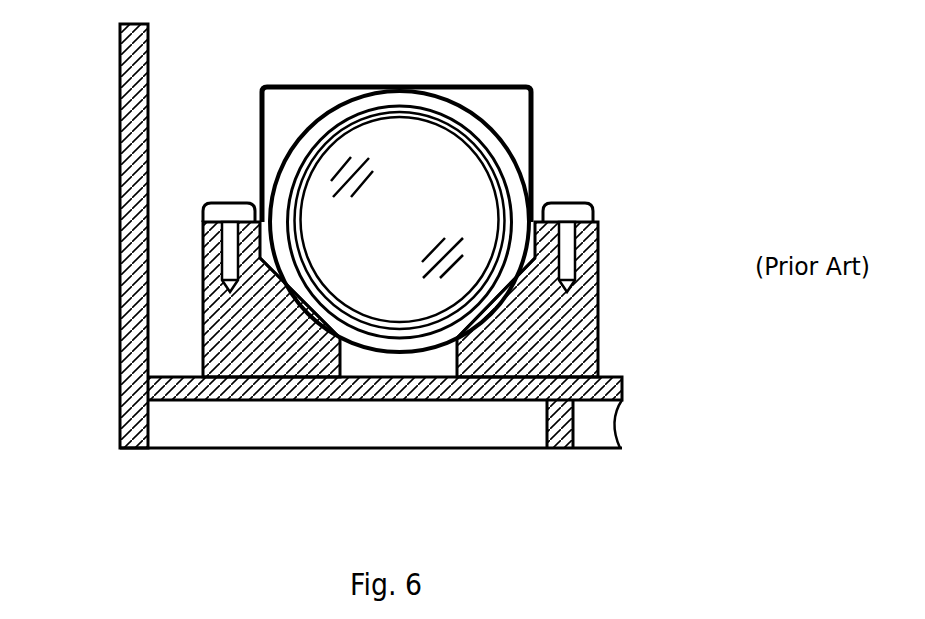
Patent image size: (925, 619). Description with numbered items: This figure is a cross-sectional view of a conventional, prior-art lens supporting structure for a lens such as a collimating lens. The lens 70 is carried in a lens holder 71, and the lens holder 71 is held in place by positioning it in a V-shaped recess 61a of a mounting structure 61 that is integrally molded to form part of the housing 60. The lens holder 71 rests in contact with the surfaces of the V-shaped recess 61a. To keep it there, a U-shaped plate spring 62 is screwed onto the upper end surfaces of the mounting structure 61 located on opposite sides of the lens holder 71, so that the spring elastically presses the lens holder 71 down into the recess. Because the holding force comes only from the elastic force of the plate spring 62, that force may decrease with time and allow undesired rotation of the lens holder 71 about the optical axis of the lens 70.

The housing 60 is at (120, 226).
The mounting structure 61 is at (598, 303).
The V-shaped recess 61a is at (318, 297).
The U-shaped plate spring 62 is at (308, 86).
The lens 70 is at (432, 146).
The lens holder 71 is at (502, 136).